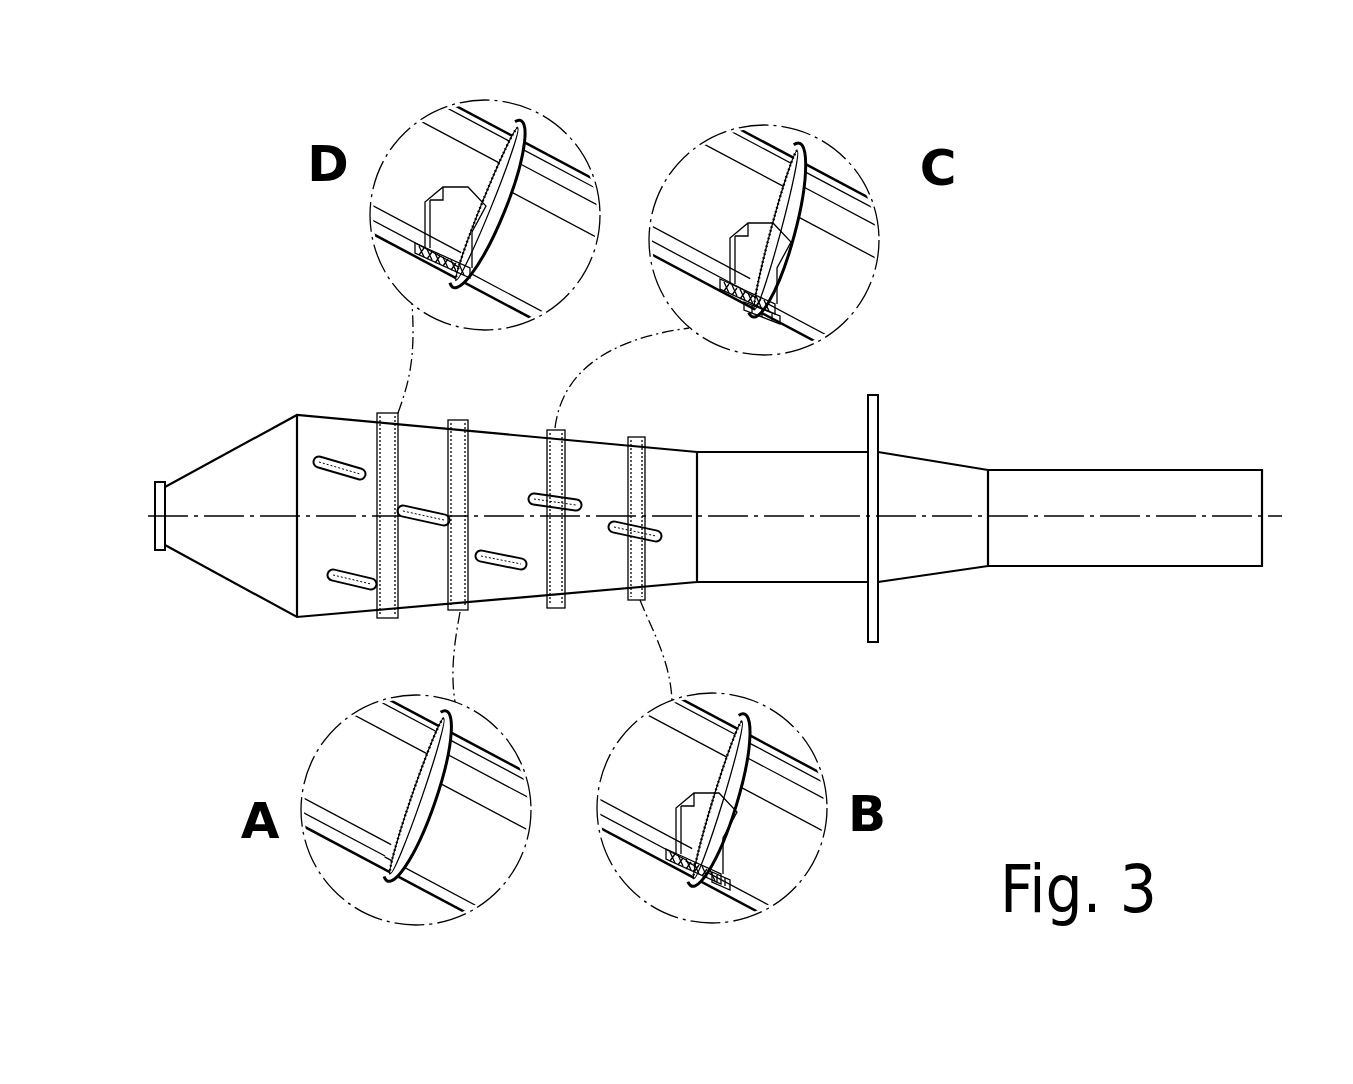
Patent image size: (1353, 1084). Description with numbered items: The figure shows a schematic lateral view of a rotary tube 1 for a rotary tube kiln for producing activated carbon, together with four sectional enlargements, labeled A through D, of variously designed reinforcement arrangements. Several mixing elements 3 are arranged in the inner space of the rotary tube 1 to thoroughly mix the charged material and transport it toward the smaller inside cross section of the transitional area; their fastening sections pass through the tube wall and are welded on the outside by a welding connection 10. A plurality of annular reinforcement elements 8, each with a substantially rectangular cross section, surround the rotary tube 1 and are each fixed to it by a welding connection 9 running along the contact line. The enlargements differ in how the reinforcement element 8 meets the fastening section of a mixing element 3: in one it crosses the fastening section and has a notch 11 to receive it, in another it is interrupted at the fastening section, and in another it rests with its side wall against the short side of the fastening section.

In FIG. 3, the rotary tube 1 is at (240, 367).
In FIG. 3, the mixing element 3 is at (340, 456).
In FIG. 3D, the mixing element 3 is at (448, 212).
In FIG. 3C, the mixing element 3 is at (749, 245).
In FIG. 3B, the mixing element 3 is at (722, 818).
In FIG. 3, the reinforcement element 8 is at (460, 610).
In FIG. 3D, the reinforcement element 8 is at (522, 150).
In FIG. 3C, the reinforcement element 8 is at (815, 152).
In FIG. 3A, the reinforcement element 8 is at (460, 838).
In FIG. 3B, the reinforcement element 8 is at (757, 770).
In FIG. 3, the welding connection 9 is at (380, 483).
In FIG. 3D, the welding connection 9 is at (548, 152).
In FIG. 3C, the welding connection 9 is at (793, 203).
In FIG. 3A, the welding connection 9 is at (445, 750).
In FIG. 3B, the welding connection 9 is at (763, 733).
In FIG. 3D, the welding connection 10 is at (420, 258).
In FIG. 3C, the welding connection 10 is at (730, 290).
In FIG. 3B, the welding connection 10 is at (667, 857).
In FIG. 3C, the notch 11 is at (760, 318).
In FIG. 3B, the notch 11 is at (724, 886).